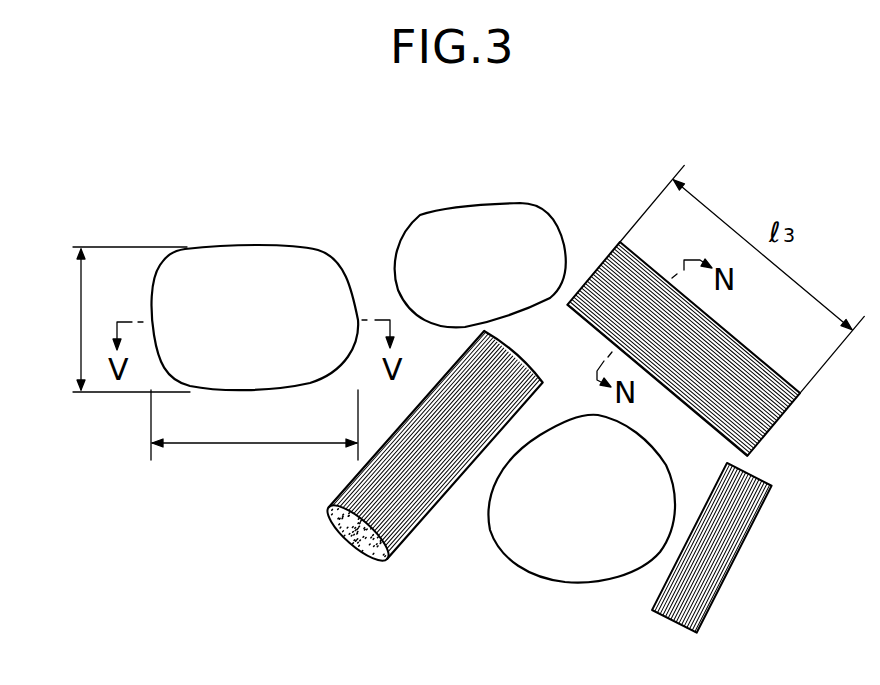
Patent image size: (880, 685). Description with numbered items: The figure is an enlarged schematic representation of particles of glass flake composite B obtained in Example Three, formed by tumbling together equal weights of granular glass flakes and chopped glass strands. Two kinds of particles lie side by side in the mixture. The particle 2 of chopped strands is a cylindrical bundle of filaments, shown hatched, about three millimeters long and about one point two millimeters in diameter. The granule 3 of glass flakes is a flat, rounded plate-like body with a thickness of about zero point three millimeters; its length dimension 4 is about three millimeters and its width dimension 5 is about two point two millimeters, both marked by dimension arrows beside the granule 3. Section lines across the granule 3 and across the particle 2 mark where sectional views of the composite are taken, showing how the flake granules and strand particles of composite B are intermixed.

The particle of chopped strands 2 is at (777, 423).
The granule of glass flakes 3 is at (265, 255).
The length l4 of granular piece 4 is at (254, 425).
The height l5 of granular piece 5 is at (109, 319).